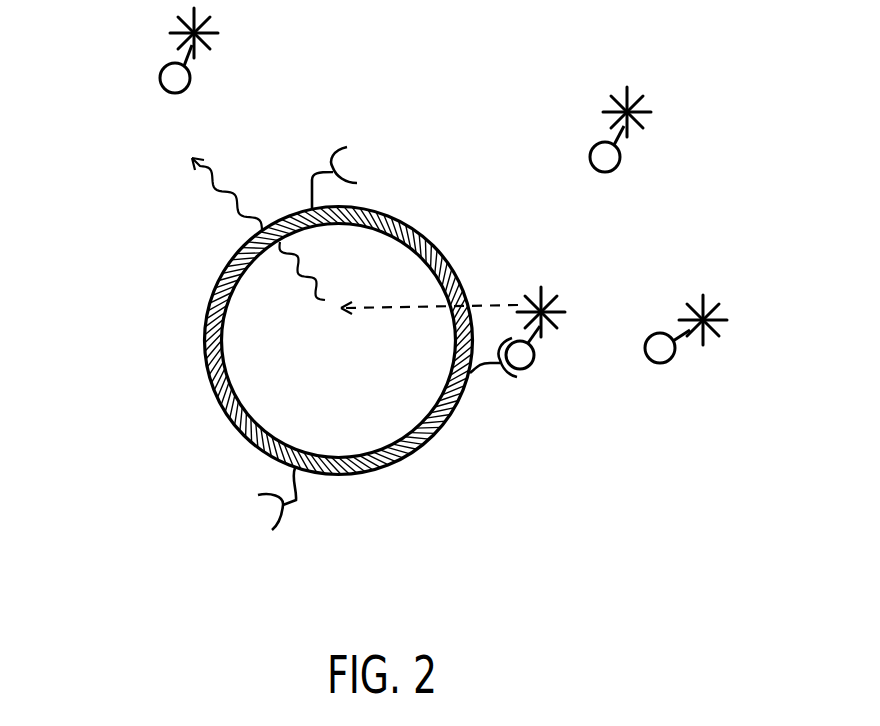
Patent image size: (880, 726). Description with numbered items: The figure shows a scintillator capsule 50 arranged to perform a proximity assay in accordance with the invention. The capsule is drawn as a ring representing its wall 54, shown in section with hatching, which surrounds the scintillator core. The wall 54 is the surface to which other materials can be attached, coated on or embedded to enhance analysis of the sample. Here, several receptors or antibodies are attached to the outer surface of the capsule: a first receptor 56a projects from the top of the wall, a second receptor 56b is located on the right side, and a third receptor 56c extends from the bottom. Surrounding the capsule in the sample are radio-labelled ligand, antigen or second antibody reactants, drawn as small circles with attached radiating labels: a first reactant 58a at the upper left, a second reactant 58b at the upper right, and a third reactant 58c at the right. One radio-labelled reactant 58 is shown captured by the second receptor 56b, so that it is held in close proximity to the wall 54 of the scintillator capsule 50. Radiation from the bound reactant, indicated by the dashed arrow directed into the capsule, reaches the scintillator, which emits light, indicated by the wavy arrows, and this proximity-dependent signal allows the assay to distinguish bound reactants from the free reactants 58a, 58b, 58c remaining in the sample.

The scintillator capsule 50 is at (460, 160).
The wall 54 is at (220, 388).
The receptor 56a is at (312, 173).
The receptor 56b is at (488, 375).
The receptor 56c is at (297, 500).
The radio-labelled reactant 58a is at (168, 75).
The radio-labelled reactant 58b is at (610, 160).
The radio-labelled reactant 58c is at (665, 355).
The radio-labelled reactant 58 is at (535, 328).